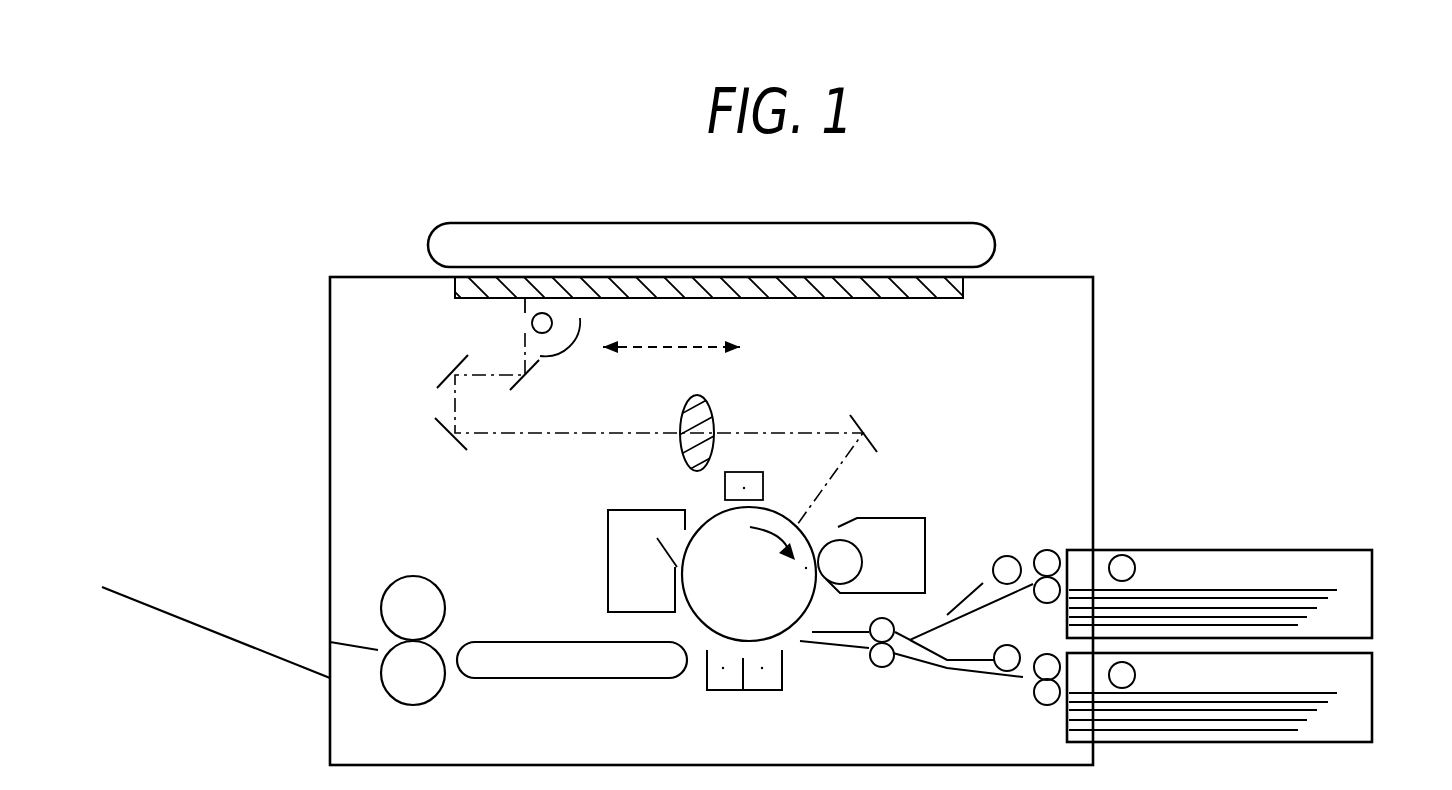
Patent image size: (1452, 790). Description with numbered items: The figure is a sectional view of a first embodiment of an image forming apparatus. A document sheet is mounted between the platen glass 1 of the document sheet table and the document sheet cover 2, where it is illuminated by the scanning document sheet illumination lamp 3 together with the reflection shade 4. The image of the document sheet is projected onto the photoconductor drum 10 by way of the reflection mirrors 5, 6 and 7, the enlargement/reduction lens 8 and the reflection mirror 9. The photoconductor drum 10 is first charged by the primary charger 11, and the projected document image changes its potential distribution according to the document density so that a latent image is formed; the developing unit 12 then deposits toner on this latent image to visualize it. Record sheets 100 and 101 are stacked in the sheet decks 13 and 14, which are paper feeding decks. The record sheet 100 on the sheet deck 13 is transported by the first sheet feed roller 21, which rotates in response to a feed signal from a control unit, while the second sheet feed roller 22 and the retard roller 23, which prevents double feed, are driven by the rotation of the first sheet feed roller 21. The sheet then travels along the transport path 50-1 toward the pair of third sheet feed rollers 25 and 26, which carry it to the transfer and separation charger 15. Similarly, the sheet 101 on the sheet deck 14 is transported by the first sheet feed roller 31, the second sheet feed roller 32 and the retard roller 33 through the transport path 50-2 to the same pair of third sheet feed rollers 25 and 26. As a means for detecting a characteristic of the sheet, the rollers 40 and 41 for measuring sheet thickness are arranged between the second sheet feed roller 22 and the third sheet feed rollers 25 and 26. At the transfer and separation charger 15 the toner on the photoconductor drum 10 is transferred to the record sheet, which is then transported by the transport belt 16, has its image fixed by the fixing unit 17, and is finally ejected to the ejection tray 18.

The platen glass 1 is at (922, 298).
The document sheet cover 2 is at (934, 232).
The scanning document sheet illumination lamp 3 is at (528, 323).
The reflection shade 4 is at (585, 331).
The reflection mirror 5 is at (540, 372).
The reflection mirror 6 is at (445, 373).
The reflection mirror 7 is at (440, 438).
The enlargement/reduction lens 8 is at (714, 425).
The reflection mirror 9 is at (880, 440).
The photoconductor drum 10 is at (749, 574).
The primary charger 11 is at (765, 480).
The developing unit 12 is at (891, 518).
The sheet deck 13 is at (1375, 574).
The sheet deck 14 is at (1375, 685).
The transfer and separation charger 15 is at (745, 691).
The transport belt 16 is at (532, 642).
The fixing unit 17 is at (436, 583).
The ejection tray 18 is at (226, 634).
The first sheet feed roller 21 is at (1128, 556).
The second sheet feed roller 22 is at (1049, 550).
The retard roller 23 is at (1028, 605).
The third sheet feed roller 25 is at (870, 625).
The third sheet feed roller 26 is at (871, 667).
The first sheet feed roller 31 is at (1136, 675).
The second sheet feed roller 32 is at (1045, 656).
The retard roller 33 is at (1045, 705).
The roller for measuring sheet thickness 40 is at (1007, 556).
The roller for measuring sheet thickness 41 is at (1005, 672).
The transport path 50-1 is at (968, 603).
The transport path 50-2 is at (955, 673).
The record sheets 100 is at (1212, 590).
The record sheets 101 is at (1261, 693).